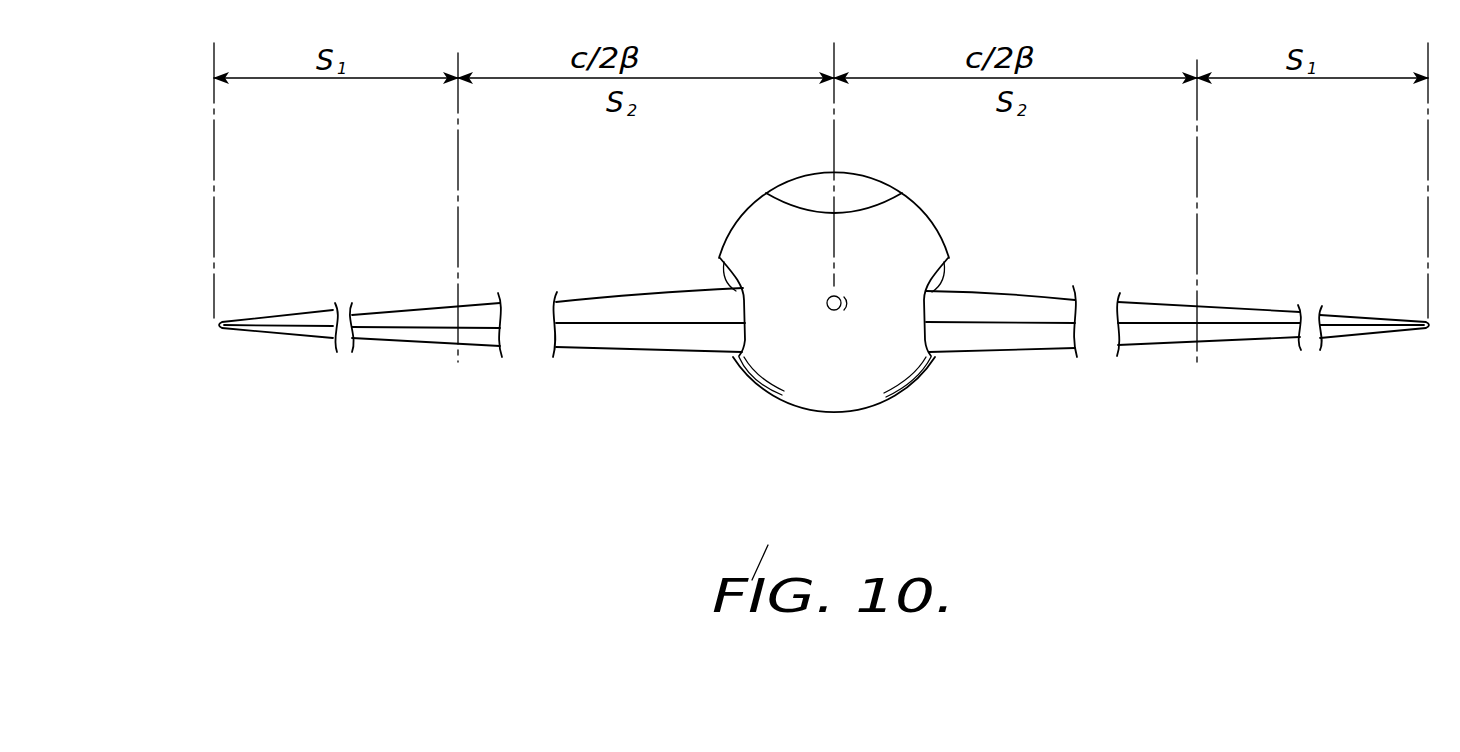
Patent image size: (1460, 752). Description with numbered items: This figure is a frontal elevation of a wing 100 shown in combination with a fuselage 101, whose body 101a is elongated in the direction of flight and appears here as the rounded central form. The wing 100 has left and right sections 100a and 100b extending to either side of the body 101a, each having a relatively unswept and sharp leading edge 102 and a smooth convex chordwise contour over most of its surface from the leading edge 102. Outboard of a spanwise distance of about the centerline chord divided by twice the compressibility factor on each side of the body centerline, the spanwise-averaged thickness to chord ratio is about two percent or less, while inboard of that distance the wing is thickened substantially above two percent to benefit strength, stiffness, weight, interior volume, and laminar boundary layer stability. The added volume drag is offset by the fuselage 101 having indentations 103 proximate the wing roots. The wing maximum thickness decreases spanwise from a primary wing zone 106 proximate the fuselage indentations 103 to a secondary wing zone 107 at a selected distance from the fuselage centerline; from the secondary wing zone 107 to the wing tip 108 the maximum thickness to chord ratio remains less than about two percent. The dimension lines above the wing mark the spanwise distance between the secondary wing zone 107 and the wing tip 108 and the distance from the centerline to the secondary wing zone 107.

The wing 100 is at (600, 386).
The left wing section 100a is at (600, 286).
The right wing section 100b is at (1250, 290).
The fuselage 101 is at (935, 207).
The body 101a is at (880, 370).
The leading edge 102 is at (576, 300).
The indentations 103 is at (724, 283).
The primary wing zone 106 is at (722, 373).
The secondary wing zone 107 is at (452, 349).
The wing tip 108 is at (212, 331).